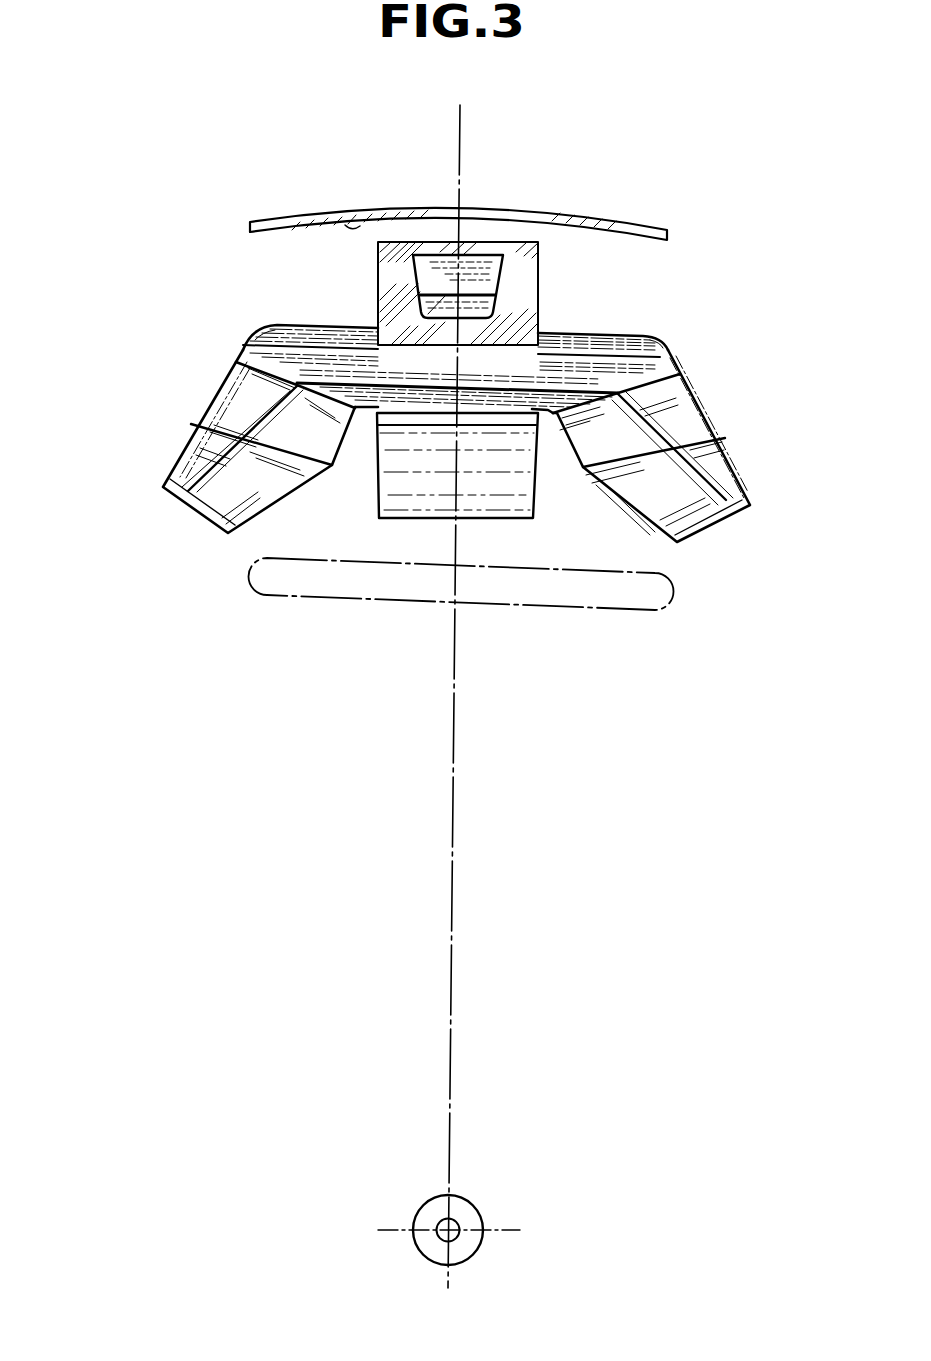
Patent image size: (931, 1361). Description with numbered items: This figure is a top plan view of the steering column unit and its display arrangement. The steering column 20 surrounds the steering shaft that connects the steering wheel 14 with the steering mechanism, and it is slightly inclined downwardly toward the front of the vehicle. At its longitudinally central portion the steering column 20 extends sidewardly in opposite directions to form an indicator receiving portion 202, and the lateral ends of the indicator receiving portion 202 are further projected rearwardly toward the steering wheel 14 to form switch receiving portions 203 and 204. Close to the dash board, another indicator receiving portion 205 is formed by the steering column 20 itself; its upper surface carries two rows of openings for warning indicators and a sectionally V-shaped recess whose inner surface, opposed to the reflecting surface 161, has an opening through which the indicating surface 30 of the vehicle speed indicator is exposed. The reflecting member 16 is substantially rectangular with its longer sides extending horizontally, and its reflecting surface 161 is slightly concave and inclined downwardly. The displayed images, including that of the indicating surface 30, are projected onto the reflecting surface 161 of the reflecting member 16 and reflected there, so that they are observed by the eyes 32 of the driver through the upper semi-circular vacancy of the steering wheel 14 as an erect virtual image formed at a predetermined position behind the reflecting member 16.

The steering wheel 14 is at (317, 592).
The reflecting member 16 is at (301, 219).
The reflecting surface 161 is at (348, 226).
The steering column 20 is at (377, 465).
The indicating surface of vehicle speed indicator 30 is at (420, 304).
The eyes of the driver 32 is at (424, 1210).
The indicator receiving portion 202 is at (523, 373).
The switch receiving portion 203 is at (188, 445).
The switch receiving portion 204 is at (693, 510).
The indicator receiving portion 205 is at (520, 281).